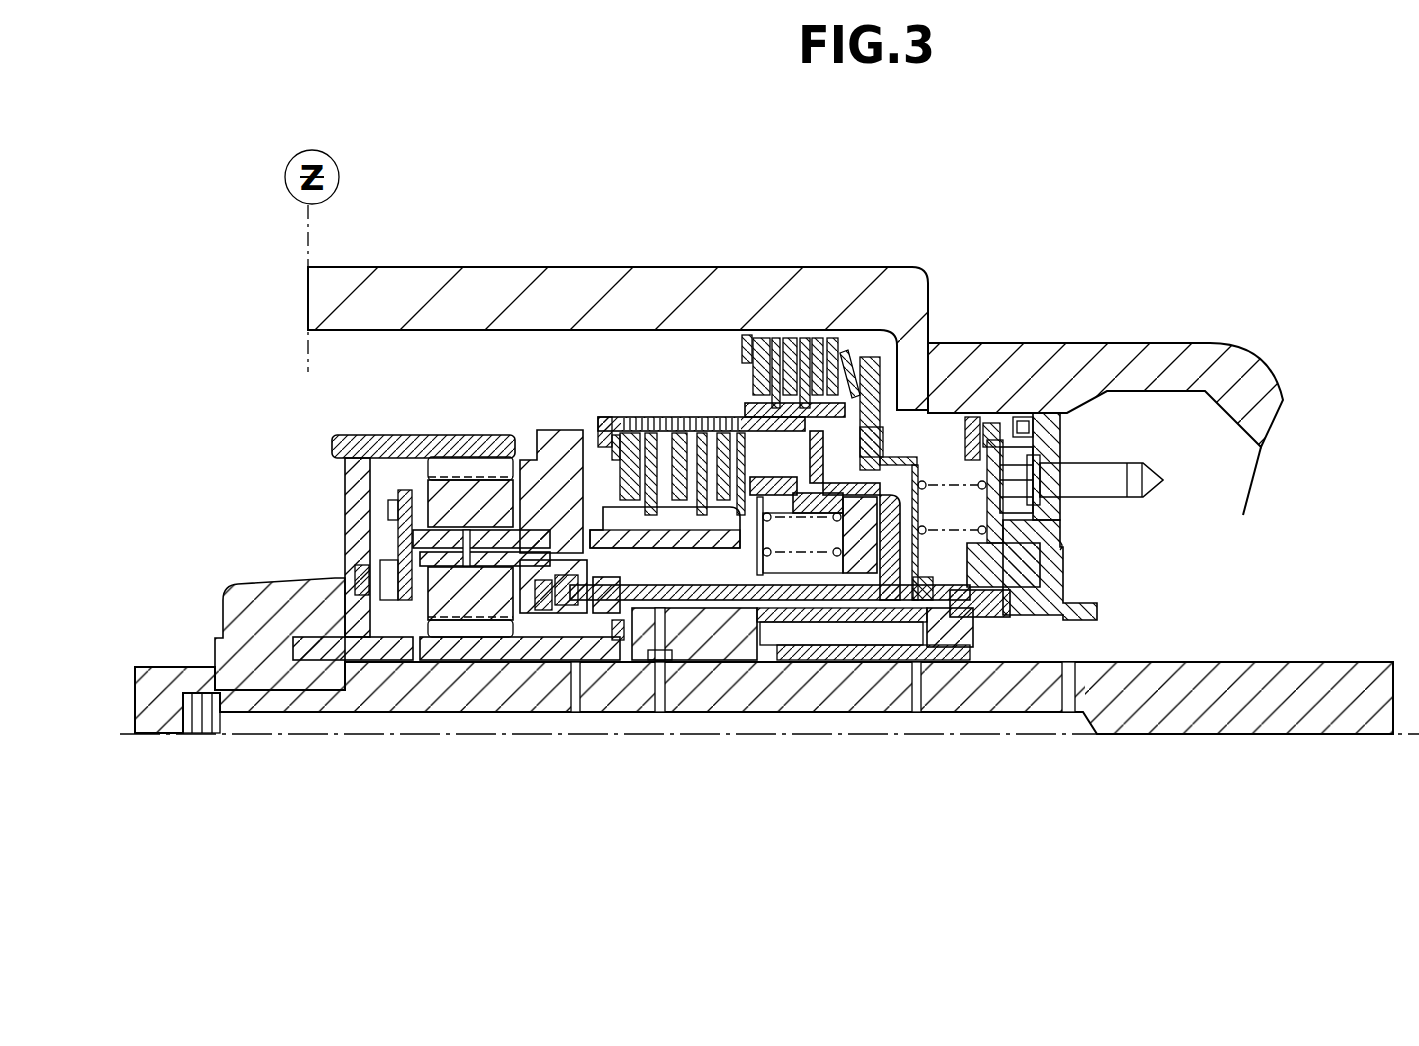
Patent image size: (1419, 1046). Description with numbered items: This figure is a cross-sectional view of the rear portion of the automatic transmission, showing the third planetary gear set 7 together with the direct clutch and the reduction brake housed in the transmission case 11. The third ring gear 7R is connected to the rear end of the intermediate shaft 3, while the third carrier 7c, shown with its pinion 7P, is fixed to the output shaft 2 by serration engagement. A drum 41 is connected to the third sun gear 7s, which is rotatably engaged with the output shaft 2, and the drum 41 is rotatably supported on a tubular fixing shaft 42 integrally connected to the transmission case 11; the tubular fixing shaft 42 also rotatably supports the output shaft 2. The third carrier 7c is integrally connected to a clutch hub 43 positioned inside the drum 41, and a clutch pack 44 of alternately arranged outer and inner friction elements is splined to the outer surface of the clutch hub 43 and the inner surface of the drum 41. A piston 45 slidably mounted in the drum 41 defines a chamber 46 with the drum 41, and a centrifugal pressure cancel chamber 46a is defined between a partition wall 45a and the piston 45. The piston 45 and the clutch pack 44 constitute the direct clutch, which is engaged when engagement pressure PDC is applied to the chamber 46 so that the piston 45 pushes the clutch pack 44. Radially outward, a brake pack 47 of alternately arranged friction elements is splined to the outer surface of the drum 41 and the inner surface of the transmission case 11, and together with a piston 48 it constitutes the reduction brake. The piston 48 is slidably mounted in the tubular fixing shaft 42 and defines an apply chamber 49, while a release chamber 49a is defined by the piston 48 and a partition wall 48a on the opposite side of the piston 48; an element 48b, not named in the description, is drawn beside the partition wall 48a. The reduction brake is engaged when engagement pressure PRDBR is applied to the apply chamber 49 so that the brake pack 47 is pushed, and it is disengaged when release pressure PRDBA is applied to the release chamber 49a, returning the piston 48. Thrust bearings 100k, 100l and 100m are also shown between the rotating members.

The output shaft 2 is at (1243, 725).
The intermediate shaft 3 is at (245, 597).
The third planetary gear set 7 is at (446, 428).
The third ring gear 7R is at (388, 437).
The permanent magnet 7P is at (483, 465).
The third carrier 7c is at (395, 545).
The third sun gear 7s is at (455, 648).
The transmission case 11 is at (907, 268).
The drum 41 is at (670, 450).
The tubular fixing shaft 42 is at (695, 650).
The clutch hub 43 is at (678, 540).
The clutch pack 44 is at (667, 448).
The piston 45 is at (797, 580).
The partition wall 45a is at (770, 545).
The chamber 46 is at (882, 545).
The centrifugal pressure cancel chamber 46a is at (792, 560).
The brake pack 47 is at (823, 358).
The piston 48 is at (1067, 553).
The partition wall 48a is at (912, 448).
The bolt 48b is at (1027, 480).
The apply chamber 49 is at (1013, 578).
The release chamber 49a is at (1062, 545).
The thrust bearing 100k is at (363, 590).
The thrust bearing 100l is at (540, 600).
The thrust bearing 100m is at (612, 622).
The engagement pressure PDC is at (843, 572).
The engagement pressure PRDBR is at (939, 572).
The release pressure PRDBA is at (1002, 590).